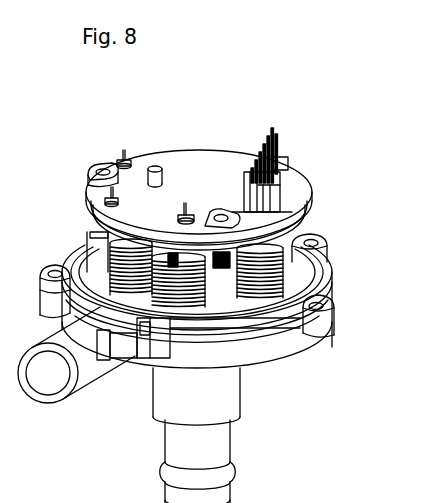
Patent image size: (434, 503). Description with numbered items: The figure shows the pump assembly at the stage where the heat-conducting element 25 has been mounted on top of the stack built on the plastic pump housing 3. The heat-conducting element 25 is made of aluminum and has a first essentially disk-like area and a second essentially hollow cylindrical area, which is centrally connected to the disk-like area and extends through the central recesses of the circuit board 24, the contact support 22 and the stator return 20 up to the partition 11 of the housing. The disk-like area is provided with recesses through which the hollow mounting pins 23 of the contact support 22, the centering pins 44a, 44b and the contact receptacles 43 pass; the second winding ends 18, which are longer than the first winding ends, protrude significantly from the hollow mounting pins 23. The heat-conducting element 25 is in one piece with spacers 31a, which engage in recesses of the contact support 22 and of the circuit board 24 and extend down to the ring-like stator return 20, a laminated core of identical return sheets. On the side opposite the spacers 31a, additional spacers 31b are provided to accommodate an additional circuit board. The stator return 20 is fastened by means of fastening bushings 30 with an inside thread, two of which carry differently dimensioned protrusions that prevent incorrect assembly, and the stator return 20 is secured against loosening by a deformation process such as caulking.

The pump housing 3 is at (340, 324).
The partition 11 is at (337, 277).
The second winding ends 18 is at (123, 151).
The stator return 20 is at (214, 262).
The contact support 22 is at (306, 228).
The mounting pins 23 is at (128, 159).
The circuit board 24 is at (304, 219).
The heat-conducting element 25 is at (312, 193).
The fastening bushings 30 is at (150, 310).
The spacers 31a is at (222, 268).
The additional spacers 31b is at (92, 170).
The contact receptacles 43 is at (281, 188).
The centering pins 44a is at (158, 167).
The centering pins 44b is at (270, 175).